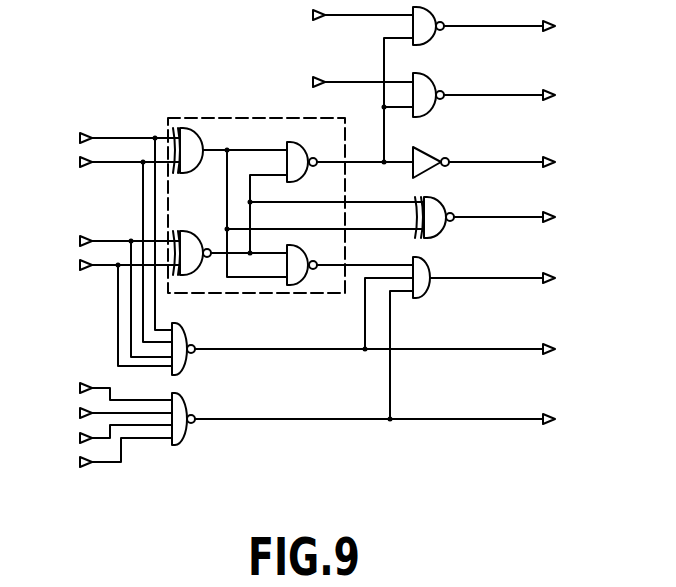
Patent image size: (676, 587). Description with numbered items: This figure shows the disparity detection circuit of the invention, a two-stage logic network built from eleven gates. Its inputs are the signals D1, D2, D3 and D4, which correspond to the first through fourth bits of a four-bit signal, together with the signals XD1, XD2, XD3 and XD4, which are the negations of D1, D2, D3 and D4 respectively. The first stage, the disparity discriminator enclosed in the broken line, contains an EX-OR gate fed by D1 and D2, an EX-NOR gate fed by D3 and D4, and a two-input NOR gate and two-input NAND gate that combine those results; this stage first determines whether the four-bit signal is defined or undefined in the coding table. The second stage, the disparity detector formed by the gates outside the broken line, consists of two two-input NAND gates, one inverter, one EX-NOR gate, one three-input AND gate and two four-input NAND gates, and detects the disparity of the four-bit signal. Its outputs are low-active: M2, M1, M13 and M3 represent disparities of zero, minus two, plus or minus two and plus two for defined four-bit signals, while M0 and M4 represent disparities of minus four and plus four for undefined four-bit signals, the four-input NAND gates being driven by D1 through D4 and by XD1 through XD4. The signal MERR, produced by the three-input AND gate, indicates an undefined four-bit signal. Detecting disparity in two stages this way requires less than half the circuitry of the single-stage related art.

The D1 input signal D1 is at (230, 199).
The D2 input signal D2 is at (113, 248).
The D3 input signal D3 is at (113, 293).
The D4 input signal D4 is at (113, 311).
The XD1 input signal XD1 is at (212, 201).
The XD2 input signal XD2 is at (92, 408).
The XD3 input signal XD3 is at (92, 439).
The XD4 input signal XD4 is at (92, 462).
The M1 output signal M1 is at (504, 26).
The M3 output signal M3 is at (504, 95).
The M13 output signal M13 is at (509, 162).
The M2 output signal M2 is at (505, 217).
The MERR output signal MERR is at (491, 339).
The M4 output signal M4 is at (383, 349).
The M0 output signal M0 is at (383, 419).